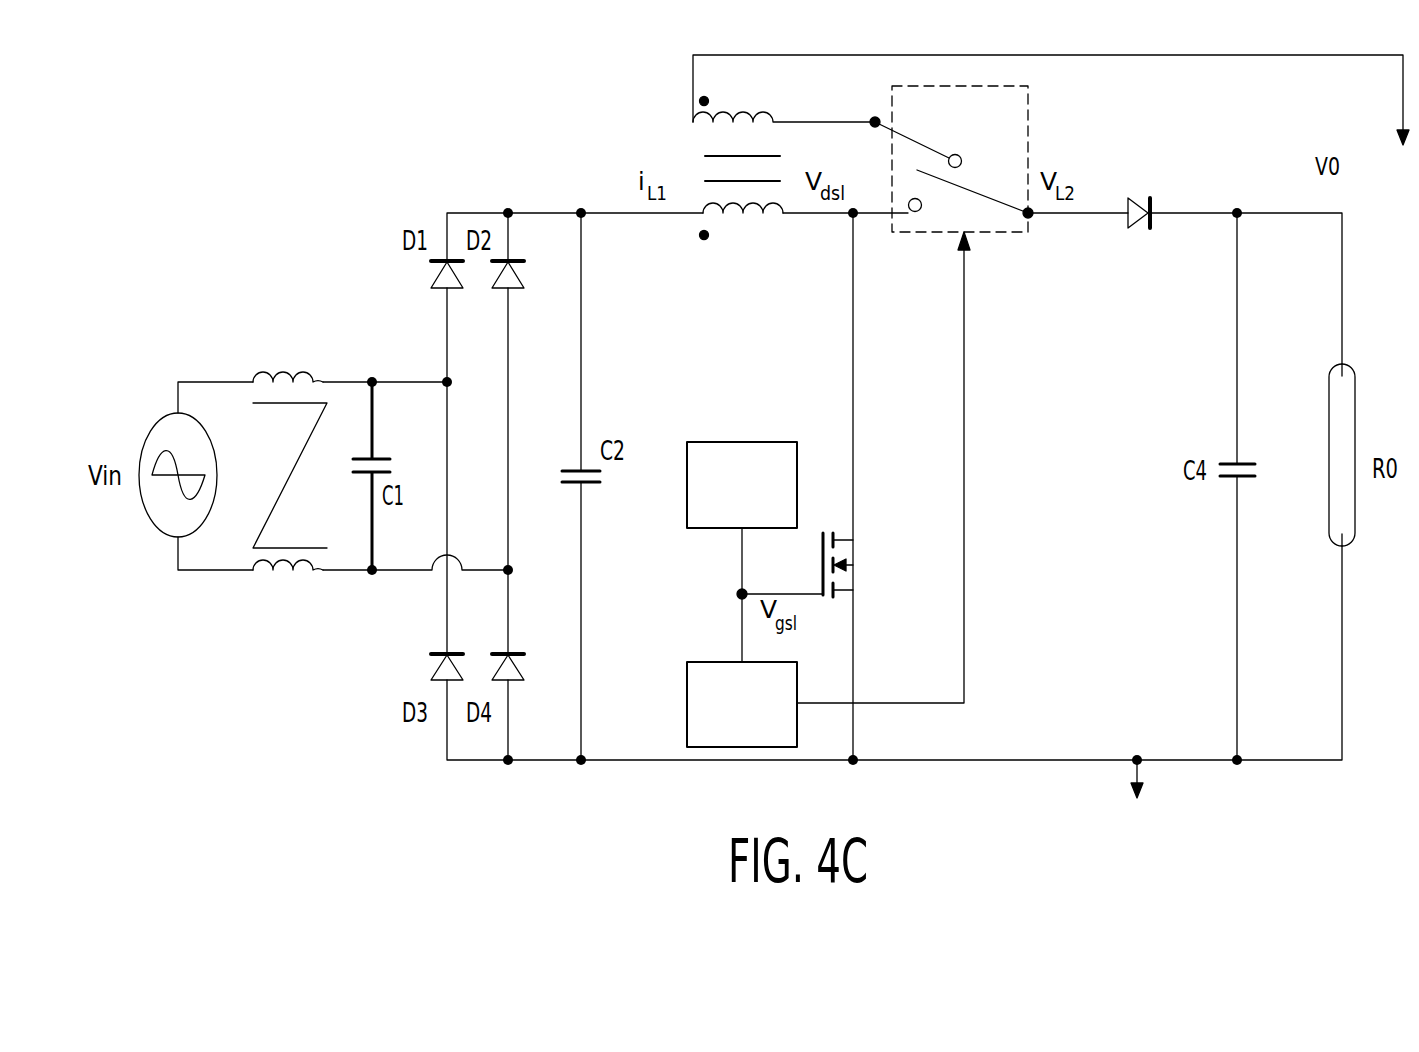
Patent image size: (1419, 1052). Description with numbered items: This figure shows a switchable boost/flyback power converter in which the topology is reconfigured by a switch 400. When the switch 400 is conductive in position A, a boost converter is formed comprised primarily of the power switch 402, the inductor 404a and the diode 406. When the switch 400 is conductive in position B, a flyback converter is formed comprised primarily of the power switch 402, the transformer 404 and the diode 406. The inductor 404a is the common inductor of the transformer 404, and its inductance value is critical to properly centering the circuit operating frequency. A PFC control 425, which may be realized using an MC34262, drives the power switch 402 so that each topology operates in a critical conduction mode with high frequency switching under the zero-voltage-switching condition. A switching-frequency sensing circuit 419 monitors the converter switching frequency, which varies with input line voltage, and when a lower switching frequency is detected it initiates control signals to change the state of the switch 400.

The switch 400 is at (1030, 110).
The power switch 402 is at (855, 582).
The transformer 404 is at (765, 122).
The inductor 404a is at (765, 207).
The diode 406 is at (1136, 222).
The switching-frequency sensing circuit 419 is at (712, 660).
The PFC control 425 is at (729, 440).